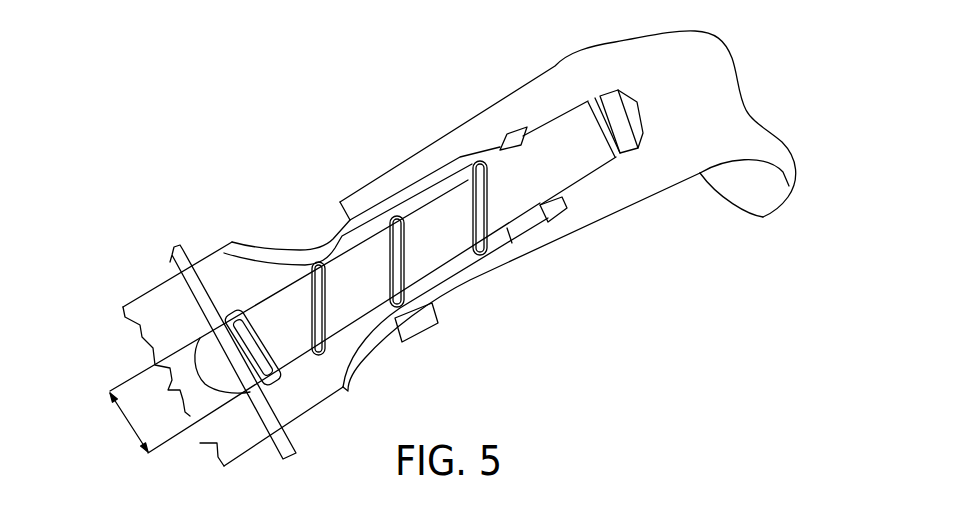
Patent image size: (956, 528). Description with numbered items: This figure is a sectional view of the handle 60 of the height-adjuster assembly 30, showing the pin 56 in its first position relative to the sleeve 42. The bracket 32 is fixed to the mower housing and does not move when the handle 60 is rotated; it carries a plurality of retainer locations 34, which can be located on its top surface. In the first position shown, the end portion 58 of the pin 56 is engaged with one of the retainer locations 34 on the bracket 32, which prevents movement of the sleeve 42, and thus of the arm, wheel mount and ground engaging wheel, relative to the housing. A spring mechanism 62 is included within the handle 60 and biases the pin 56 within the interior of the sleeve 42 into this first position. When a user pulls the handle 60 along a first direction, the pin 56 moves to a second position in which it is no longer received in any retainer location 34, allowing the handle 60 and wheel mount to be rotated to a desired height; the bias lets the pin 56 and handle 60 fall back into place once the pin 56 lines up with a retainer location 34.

The height-adjuster assembly 30 is at (238, 125).
The bracket 32 is at (172, 257).
The retainer locations 34 is at (131, 426).
The sleeve 42 is at (433, 288).
The pin 56 is at (552, 120).
The end portion 58 is at (207, 400).
The handle 60 is at (467, 102).
The spring mechanism 62 is at (328, 285).